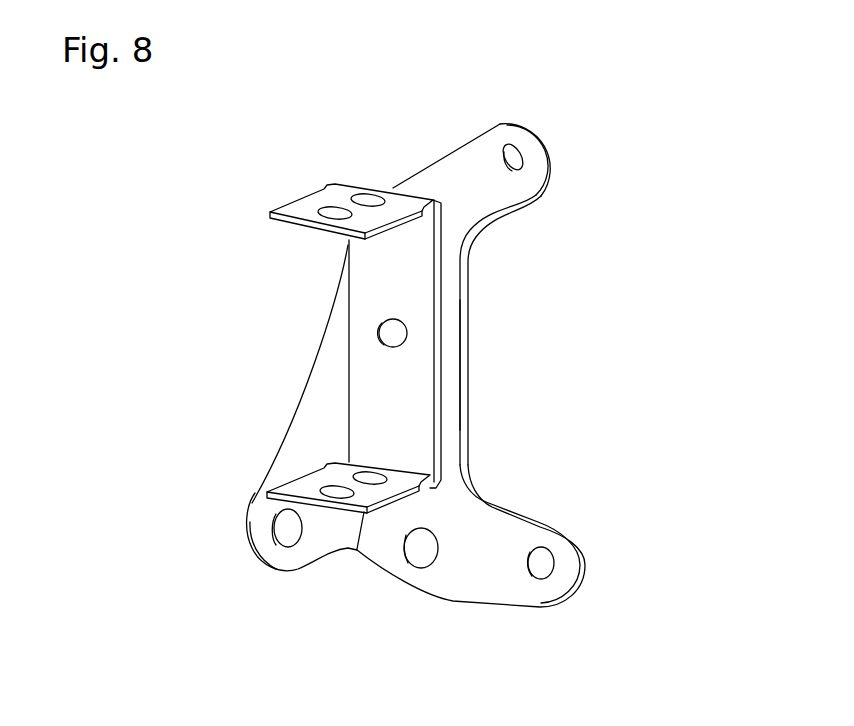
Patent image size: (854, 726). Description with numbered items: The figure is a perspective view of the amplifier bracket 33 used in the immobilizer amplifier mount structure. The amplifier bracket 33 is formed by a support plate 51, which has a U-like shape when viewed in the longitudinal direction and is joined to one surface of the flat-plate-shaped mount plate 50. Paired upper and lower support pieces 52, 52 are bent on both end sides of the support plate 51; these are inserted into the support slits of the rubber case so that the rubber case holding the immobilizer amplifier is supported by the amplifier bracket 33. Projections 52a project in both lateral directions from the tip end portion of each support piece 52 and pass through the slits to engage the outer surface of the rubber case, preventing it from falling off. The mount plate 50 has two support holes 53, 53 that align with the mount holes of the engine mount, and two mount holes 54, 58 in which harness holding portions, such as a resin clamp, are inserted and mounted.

The amplifier bracket 33 is at (478, 450).
The mount plate 50 is at (448, 337).
The support plate 51 is at (388, 392).
The support piece 52 is at (300, 213).
The projection 52a is at (268, 214).
The support hole 53 is at (286, 540).
The mount hole 54 is at (541, 563).
The mount hole 58 is at (515, 158).